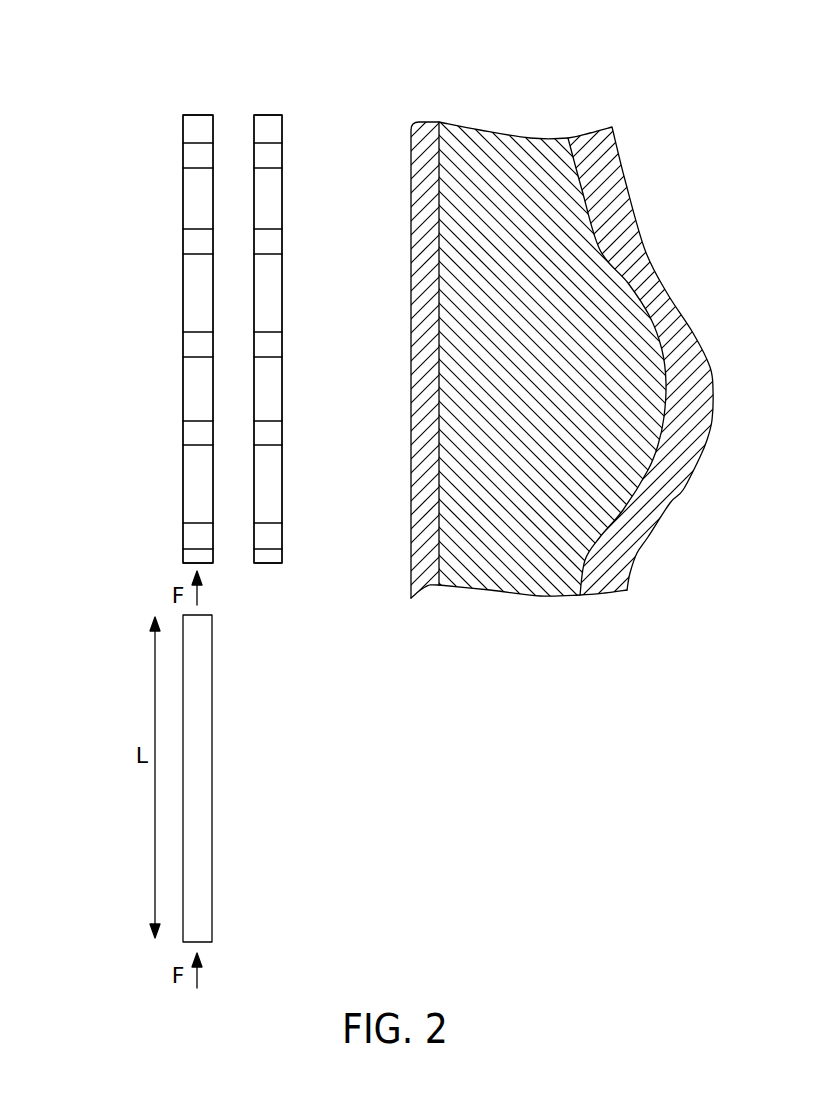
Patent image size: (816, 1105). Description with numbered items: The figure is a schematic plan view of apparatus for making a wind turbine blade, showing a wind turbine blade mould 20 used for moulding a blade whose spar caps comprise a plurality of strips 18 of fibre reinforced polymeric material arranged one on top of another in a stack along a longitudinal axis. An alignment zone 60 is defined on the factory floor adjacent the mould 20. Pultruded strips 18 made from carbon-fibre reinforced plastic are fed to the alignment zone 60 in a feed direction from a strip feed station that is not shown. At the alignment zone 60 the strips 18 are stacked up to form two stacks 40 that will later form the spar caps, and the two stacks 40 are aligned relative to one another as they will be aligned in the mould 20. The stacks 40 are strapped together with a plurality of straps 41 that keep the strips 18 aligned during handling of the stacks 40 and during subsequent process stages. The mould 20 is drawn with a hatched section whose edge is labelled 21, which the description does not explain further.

The strips 18 is at (202, 835).
The wind turbine blade mould 20 is at (551, 72).
The surface of component 21 is at (518, 573).
The stacks 40 is at (199, 122).
The straps 41 is at (197, 159).
The alignment zone 60 is at (112, 203).